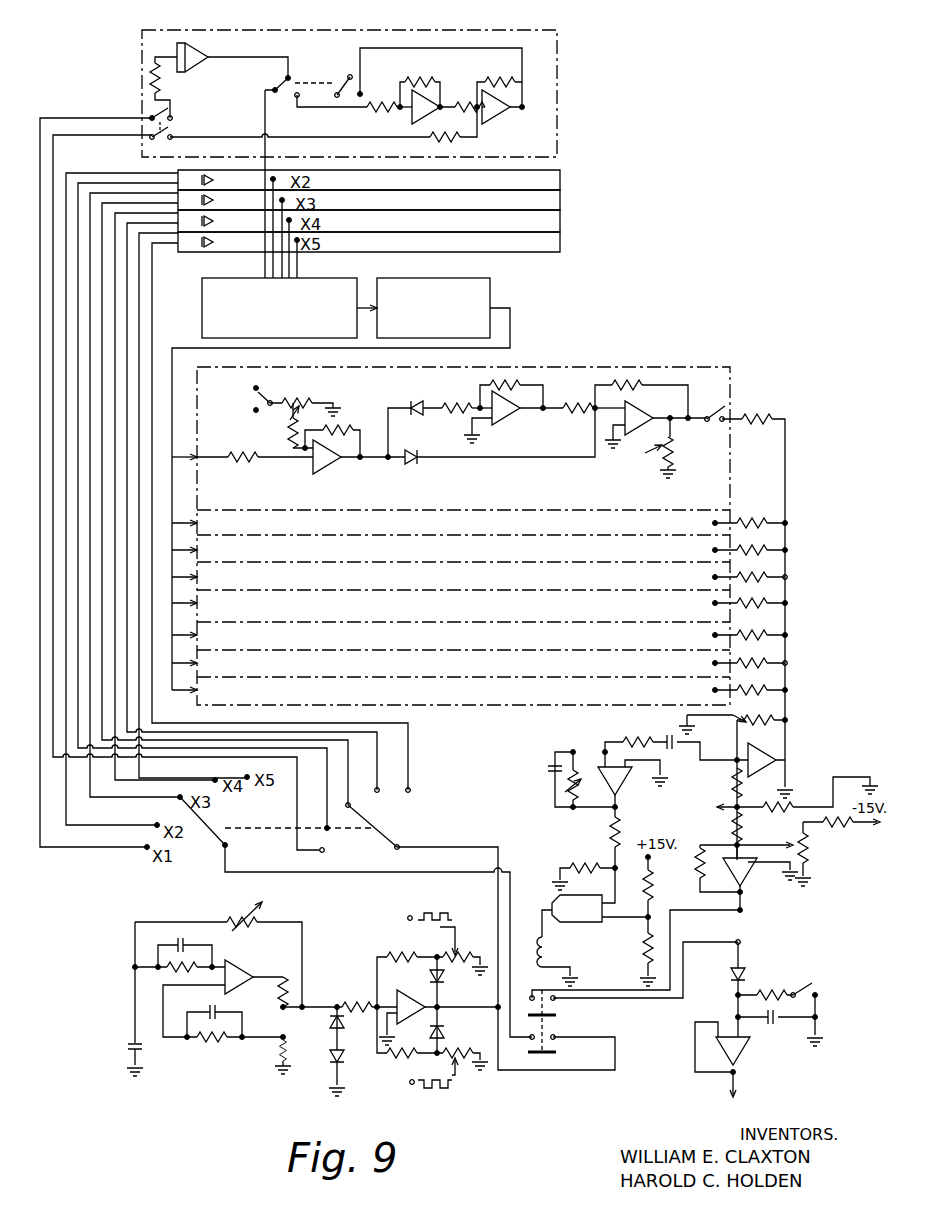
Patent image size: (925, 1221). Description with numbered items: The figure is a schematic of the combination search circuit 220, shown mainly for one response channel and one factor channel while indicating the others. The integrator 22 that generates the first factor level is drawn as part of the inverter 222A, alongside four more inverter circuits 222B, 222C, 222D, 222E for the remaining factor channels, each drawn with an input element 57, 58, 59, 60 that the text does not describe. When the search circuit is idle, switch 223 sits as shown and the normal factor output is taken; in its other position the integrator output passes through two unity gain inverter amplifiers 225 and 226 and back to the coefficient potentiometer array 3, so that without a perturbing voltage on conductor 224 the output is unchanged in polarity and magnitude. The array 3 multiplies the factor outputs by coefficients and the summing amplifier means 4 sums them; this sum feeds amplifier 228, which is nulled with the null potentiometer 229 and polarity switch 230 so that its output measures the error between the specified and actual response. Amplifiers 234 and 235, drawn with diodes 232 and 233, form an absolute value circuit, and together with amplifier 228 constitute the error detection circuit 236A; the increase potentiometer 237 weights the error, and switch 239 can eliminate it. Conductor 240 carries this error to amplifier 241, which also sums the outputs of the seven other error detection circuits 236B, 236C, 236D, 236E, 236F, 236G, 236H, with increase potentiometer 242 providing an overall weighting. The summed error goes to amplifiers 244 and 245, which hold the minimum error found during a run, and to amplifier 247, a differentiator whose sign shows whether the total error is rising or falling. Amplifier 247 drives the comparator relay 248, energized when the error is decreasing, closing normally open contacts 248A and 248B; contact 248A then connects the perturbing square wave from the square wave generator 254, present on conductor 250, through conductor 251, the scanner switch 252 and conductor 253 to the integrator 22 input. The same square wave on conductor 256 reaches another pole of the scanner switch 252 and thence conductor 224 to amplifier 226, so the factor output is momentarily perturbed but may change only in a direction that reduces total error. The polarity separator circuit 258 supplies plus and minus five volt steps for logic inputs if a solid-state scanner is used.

The coefficient potentiometer array 3 is at (336, 286).
The summing amplifier means 4 is at (494, 291).
The integrator 22 is at (200, 66).
The amplifier 57 is at (213, 180).
The amplifier 58 is at (213, 200).
The amplifier 59 is at (213, 221).
The amplifier 60 is at (213, 242).
The combination search circuit 220 is at (697, 195).
The inverter 222A is at (288, 30).
The inverter circuit 222B is at (524, 179).
The inverter circuit 222C is at (524, 199).
The inverter circuit 222D is at (524, 220).
The inverter circuit 222E is at (524, 241).
The switch 223 is at (348, 72).
The conductor 224 is at (370, 137).
The unity gain inverter amplifier 225 is at (428, 118).
The unity gain inverter amplifier 226 is at (497, 116).
The error detection amplifier 228 is at (304, 474).
The null potentiometer 229 is at (298, 400).
The polarity switch 230 is at (247, 393).
The diode 232 is at (438, 390).
The diode 233 is at (405, 474).
The amplifier 234 is at (510, 425).
The amplifier 235 is at (628, 415).
The error detection circuit 236A is at (600, 370).
The error detection circuit 236B is at (560, 536).
The error detection circuit 236C is at (562, 560).
The error detection circuit 236D is at (565, 587).
The error detection circuit 236E is at (567, 615).
The error detection circuit 236F is at (569, 645).
The error detection circuit 236G is at (572, 673).
The error detection circuit 236H is at (575, 701).
The increase potentiometer 237 is at (648, 448).
The switch 239 is at (722, 410).
The conductor 240 is at (787, 463).
The amplifier 241 is at (777, 753).
The increase potentiometer 242 is at (665, 728).
The amplifier 244 is at (752, 876).
The amplifier 245 is at (745, 1050).
The amplifier 247 is at (620, 790).
The comparator relay 248 is at (576, 925).
The relay contact 248A is at (557, 1052).
The relay contact 248B is at (560, 1015).
The conductor 250 is at (530, 1072).
The conductor 251 is at (510, 888).
The scanner switch 252 is at (245, 836).
The conductor 253 is at (72, 850).
The square wave generator 254 is at (233, 1065).
The conductor 256 is at (498, 903).
The polarity separator circuit 258 is at (490, 1003).